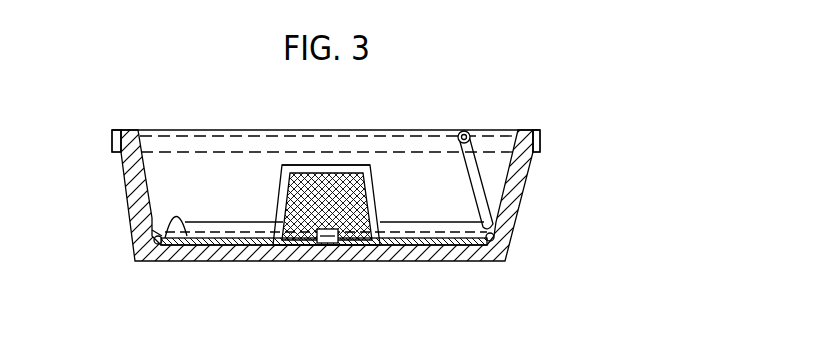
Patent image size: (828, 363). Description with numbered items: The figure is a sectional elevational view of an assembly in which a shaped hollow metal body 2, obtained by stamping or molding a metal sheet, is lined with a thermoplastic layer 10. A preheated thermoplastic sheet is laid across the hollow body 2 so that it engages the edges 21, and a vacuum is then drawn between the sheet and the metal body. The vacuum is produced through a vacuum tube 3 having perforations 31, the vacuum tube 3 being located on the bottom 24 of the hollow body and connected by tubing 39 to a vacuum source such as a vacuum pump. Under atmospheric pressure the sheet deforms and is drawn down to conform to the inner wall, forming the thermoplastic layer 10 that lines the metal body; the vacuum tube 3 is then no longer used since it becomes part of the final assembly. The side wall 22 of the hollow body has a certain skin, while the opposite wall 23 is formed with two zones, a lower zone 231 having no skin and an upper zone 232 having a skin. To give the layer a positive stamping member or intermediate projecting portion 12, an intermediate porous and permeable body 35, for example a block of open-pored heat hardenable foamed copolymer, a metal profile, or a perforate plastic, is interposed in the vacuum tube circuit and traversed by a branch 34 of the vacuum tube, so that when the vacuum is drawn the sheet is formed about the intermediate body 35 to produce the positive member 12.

The hollow body 2 is at (523, 206).
The edges 21 is at (112, 143).
The side wall 22 is at (517, 180).
The opposite wall 23 is at (142, 210).
The lower zone 231 is at (147, 230).
The upper zone 232 is at (133, 168).
The bottom 24 is at (442, 261).
The thermoplastic layer 10 is at (147, 187).
The perforations 31 is at (182, 245).
The vacuum tube 3 is at (159, 243).
The intermediate porous and permeable body 35 is at (347, 182).
The positive stamping member 12 is at (328, 165).
The branch of the vacuum tube 34 is at (328, 245).
The tubing 39 is at (481, 154).